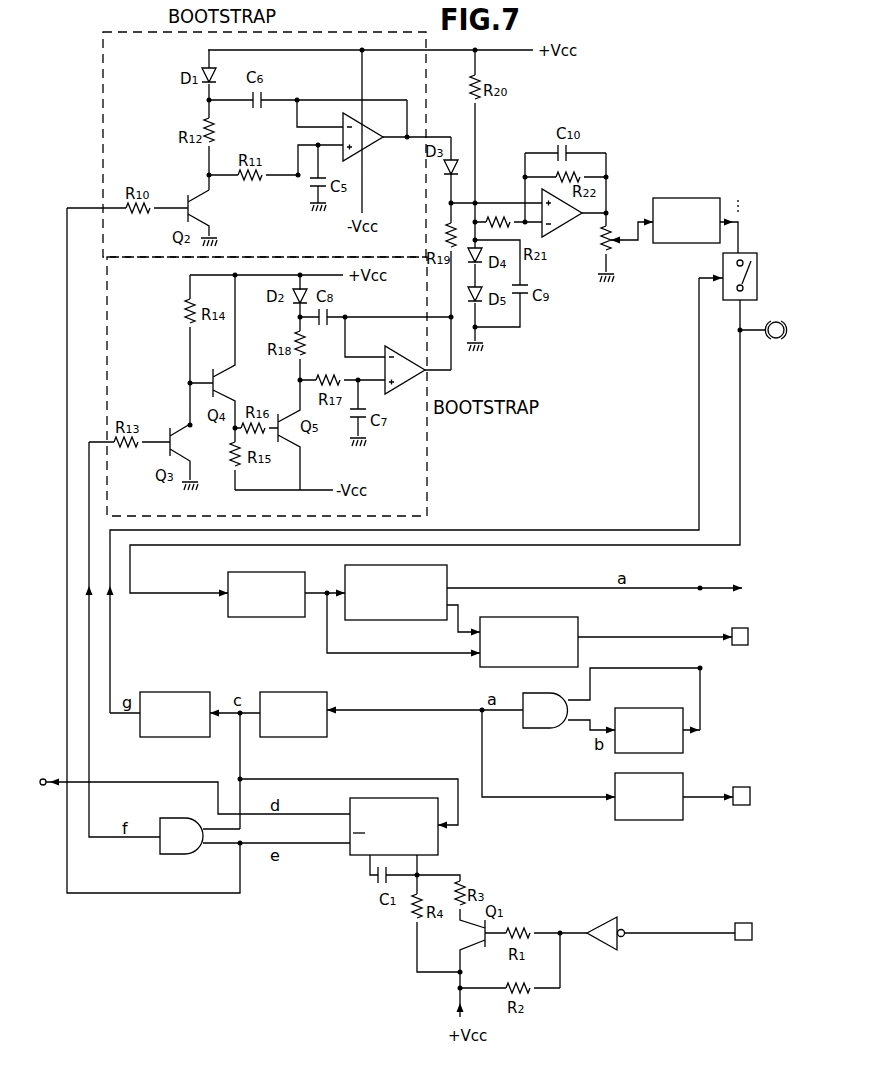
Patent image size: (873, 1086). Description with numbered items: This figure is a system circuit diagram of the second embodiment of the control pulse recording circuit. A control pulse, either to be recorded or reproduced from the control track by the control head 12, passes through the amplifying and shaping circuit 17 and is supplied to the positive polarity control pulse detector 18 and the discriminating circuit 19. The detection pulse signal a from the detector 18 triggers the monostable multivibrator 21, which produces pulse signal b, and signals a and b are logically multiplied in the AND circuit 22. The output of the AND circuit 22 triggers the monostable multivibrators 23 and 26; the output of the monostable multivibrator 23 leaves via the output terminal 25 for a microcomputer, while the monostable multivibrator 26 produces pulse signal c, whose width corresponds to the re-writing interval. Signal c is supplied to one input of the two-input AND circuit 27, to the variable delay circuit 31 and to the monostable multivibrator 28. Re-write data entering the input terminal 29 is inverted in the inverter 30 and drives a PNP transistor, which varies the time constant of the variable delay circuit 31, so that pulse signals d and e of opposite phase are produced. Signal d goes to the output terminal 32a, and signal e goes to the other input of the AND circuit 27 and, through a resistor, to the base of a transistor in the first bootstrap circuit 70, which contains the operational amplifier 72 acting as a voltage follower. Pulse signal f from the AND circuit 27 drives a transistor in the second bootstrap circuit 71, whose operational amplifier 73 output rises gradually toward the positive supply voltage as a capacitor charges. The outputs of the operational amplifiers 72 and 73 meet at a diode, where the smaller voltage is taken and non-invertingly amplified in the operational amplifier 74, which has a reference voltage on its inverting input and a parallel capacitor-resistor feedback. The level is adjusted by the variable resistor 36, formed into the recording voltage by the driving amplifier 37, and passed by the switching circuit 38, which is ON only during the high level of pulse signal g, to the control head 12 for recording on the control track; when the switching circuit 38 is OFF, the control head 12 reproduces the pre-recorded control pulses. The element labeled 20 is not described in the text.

The first bootstrap circuit 70 is at (150, 29).
The second bootstrap circuit 71 is at (428, 482).
The operational amplifier 72 is at (362, 152).
The operational amplifier 73 is at (404, 392).
The operational amplifier 74 is at (556, 238).
The variable resistor 36 is at (620, 246).
The driving amplifier 37 is at (685, 198).
The switching circuit 38 is at (745, 254).
The control head 12 is at (774, 322).
The amplifying and shaping circuit 17 is at (268, 617).
The positive polarity control pulse detector 18 is at (398, 620).
The discriminating circuit 19 is at (520, 617).
The output terminal 20 is at (742, 628).
The monostable multivibrator 21 is at (646, 708).
The AND circuit 22 is at (545, 693).
The monostable multivibrator 23 is at (652, 820).
The output terminal 25 is at (742, 787).
The monostable multivibrator 26 is at (293, 692).
The AND circuit 27 is at (182, 818).
The monostable multivibrator 28 is at (175, 692).
The input terminal 29 is at (742, 923).
The inverter 30 is at (604, 925).
The variable delay circuit 31 is at (350, 805).
The output terminal 32a is at (42, 779).